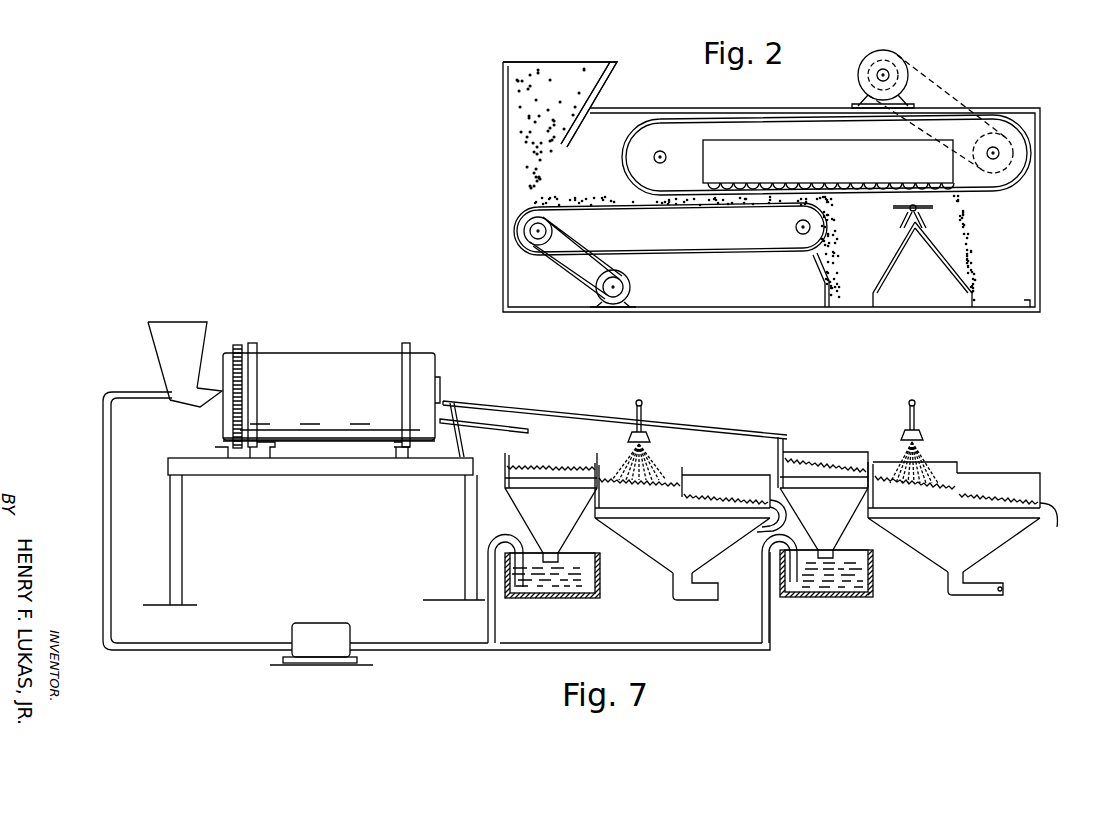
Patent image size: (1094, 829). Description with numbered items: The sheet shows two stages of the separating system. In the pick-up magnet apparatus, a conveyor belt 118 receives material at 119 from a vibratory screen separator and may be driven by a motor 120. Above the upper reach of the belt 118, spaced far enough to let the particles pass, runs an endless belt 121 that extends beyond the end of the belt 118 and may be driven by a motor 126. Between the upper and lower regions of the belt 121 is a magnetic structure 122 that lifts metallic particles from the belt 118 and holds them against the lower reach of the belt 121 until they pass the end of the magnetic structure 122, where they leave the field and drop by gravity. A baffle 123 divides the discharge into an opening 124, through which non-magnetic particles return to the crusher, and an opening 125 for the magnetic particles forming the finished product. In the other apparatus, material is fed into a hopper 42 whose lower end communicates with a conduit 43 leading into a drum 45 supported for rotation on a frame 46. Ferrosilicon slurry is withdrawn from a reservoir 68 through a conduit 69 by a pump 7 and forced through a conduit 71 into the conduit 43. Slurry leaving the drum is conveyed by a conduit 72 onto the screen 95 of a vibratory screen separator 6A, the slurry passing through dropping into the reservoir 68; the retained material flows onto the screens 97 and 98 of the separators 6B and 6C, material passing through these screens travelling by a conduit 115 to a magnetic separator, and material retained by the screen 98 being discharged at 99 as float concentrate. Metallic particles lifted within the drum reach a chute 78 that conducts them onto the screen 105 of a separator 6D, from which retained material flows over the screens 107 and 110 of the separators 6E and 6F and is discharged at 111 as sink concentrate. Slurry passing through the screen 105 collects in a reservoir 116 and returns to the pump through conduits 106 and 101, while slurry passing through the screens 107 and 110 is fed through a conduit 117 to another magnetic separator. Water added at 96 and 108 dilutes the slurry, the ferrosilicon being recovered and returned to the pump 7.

In FIG. 2, the material receiving point 119 is at (503, 117).
In FIG. 2, the motor 126 is at (897, 63).
In FIG. 2, the magnetic structure 122 is at (773, 153).
In FIG. 2, the endless belt 121 is at (693, 188).
In FIG. 2, the conveyor belt 118 is at (653, 205).
In FIG. 2, the motor 120 is at (631, 283).
In FIG. 2, the baffle 123 is at (940, 253).
In FIG. 2, the opening 124 is at (858, 308).
In FIG. 2, the opening 125 is at (1007, 300).
In FIG. 7, the hopper 42 is at (150, 333).
In FIG. 7, the conduit 43 is at (200, 407).
In FIG. 7, the drum 45 is at (316, 352).
In FIG. 7, the frame 46 is at (337, 472).
In FIG. 7, the conduit 71 is at (103, 548).
In FIG. 7, the pump 7 is at (325, 627).
In FIG. 7, the conduit 101 is at (457, 644).
In FIG. 7, the conduit 72 is at (478, 422).
In FIG. 7, the chute 78 is at (550, 410).
In FIG. 7, the screen 95 is at (553, 467).
In FIG. 7, the water addition point 96 is at (641, 408).
In FIG. 7, the screen 97 is at (679, 482).
In FIG. 7, the vibratory screen separator 6A is at (523, 504).
In FIG. 7, the vibratory screen separator 6B is at (684, 470).
In FIG. 7, the vibratory screen separator 6C is at (745, 475).
In FIG. 7, the reservoir 68 is at (598, 577).
In FIG. 7, the conduit 69 is at (490, 629).
In FIG. 7, the screen 98 is at (715, 500).
In FIG. 7, the float concentrate discharge 99 is at (760, 528).
In FIG. 7, the conduit 115 is at (707, 593).
In FIG. 7, the conduit 106 is at (760, 590).
In FIG. 7, the vibratory screen separator 6D is at (803, 452).
In FIG. 7, the screen 105 is at (832, 465).
In FIG. 7, the water addition point 108 is at (917, 422).
In FIG. 7, the vibratory screen separator 6E is at (940, 462).
In FIG. 7, the screen 107 is at (907, 481).
In FIG. 7, the screen 110 is at (966, 495).
In FIG. 7, the vibratory screen separator 6F is at (1023, 472).
In FIG. 7, the sink concentrate discharge 111 is at (1057, 524).
In FIG. 7, the reservoir 116 is at (873, 583).
In FIG. 7, the conduit 117 is at (972, 586).